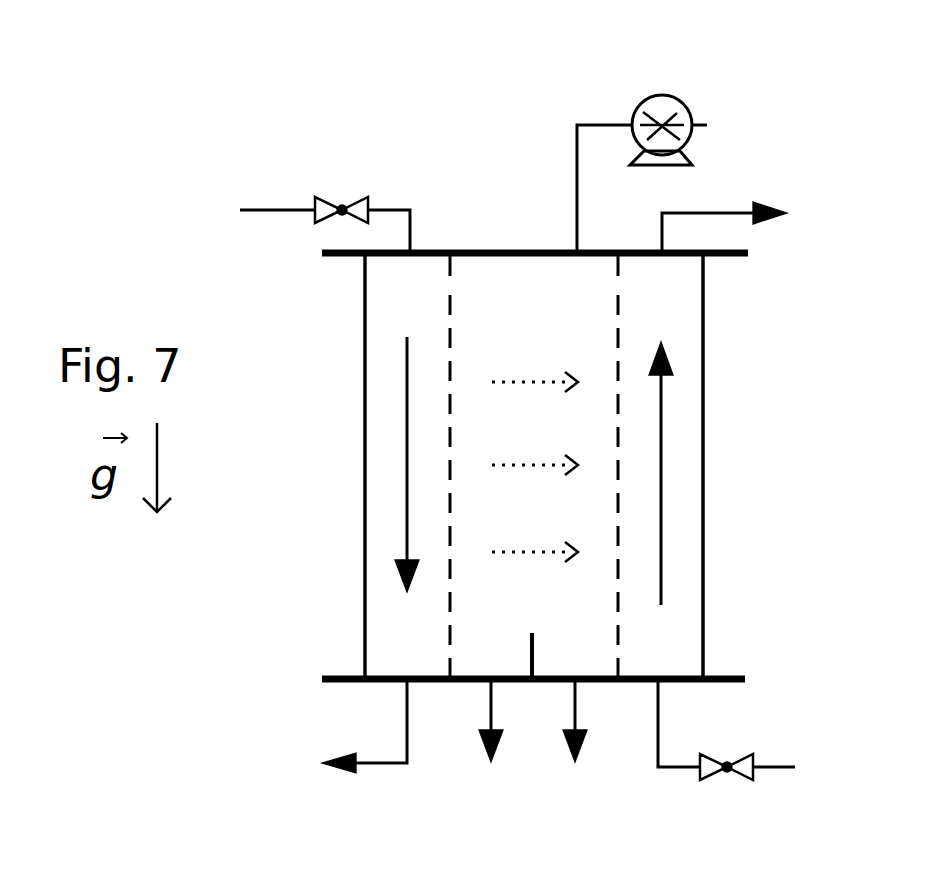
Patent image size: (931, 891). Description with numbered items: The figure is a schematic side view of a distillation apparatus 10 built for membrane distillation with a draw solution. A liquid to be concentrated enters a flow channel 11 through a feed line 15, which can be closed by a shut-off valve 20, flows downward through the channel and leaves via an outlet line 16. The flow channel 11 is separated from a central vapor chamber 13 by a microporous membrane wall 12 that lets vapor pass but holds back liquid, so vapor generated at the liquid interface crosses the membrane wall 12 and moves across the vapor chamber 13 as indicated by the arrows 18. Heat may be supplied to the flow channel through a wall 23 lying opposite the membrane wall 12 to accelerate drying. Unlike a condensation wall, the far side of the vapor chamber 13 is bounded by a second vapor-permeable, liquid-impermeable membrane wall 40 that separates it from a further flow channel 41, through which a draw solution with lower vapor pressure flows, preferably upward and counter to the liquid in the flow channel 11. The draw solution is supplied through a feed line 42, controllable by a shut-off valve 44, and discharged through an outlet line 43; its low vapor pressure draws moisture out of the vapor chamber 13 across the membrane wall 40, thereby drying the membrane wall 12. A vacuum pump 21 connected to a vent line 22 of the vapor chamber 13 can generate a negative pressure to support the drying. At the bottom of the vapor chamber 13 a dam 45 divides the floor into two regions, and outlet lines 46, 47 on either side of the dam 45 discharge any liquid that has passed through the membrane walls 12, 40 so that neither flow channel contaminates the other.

The distillation apparatus 10 is at (372, 56).
The flow channel 11 is at (400, 472).
The membrane wall 12 is at (455, 352).
The vapor chamber 13 is at (512, 273).
The feed line 15 is at (263, 213).
The outlet line 16 is at (375, 767).
The arrows 18 is at (517, 553).
The shut-off valve 20 is at (350, 200).
The vacuum pump 21 is at (682, 100).
The vent line 22 is at (572, 170).
The wall 23 is at (363, 570).
The membrane wall 40 is at (620, 318).
The flow channel 41 is at (667, 460).
The feed line 42 is at (665, 735).
The outlet line 43 is at (722, 207).
The shut-off valve 44 is at (715, 780).
The dam 45 is at (540, 638).
The outlet line 46 is at (487, 705).
The outlet line 47 is at (580, 712).